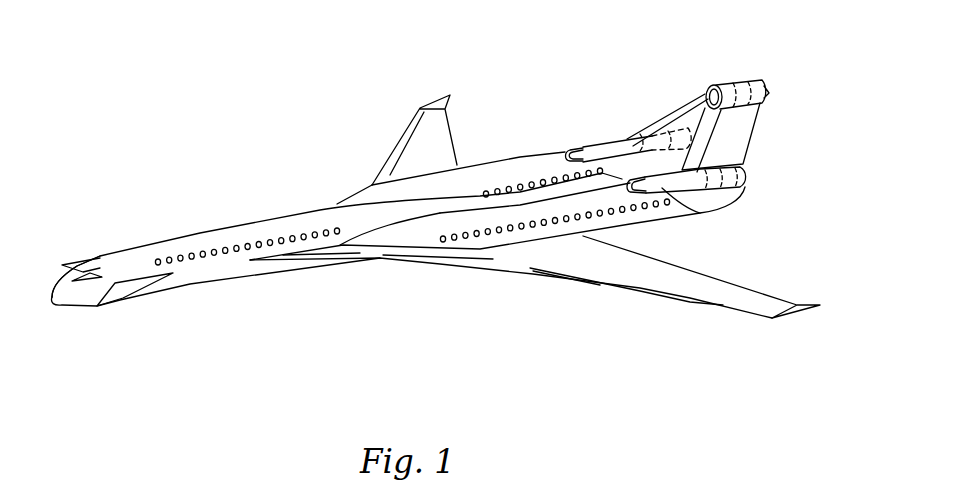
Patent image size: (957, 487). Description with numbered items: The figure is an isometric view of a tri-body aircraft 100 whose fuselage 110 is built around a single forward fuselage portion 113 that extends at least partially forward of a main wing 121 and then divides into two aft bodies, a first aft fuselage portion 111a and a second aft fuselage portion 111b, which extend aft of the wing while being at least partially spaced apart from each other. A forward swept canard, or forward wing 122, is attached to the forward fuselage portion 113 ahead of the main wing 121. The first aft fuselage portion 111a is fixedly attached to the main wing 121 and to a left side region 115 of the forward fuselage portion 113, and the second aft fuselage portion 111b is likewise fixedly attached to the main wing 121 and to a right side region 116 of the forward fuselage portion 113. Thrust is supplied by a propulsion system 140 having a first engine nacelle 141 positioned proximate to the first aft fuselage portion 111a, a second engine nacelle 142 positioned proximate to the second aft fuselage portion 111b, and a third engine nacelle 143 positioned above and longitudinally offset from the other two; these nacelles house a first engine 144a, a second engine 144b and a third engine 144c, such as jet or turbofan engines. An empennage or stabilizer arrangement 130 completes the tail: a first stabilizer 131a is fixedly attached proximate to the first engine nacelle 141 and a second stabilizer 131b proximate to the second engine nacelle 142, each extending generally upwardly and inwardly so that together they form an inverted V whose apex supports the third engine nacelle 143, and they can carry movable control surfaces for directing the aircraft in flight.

The aircraft 100 is at (230, 350).
The fuselage 110 is at (493, 195).
The first aft fuselage portion 111a is at (647, 222).
The second aft fuselage portion 111b is at (556, 157).
The forward fuselage portion 113 is at (200, 232).
The left side region 115 is at (423, 223).
The right side region 116 is at (371, 187).
The main wing 121 is at (453, 103).
The forward wing 122 is at (68, 263).
The stabilizer arrangement 130 is at (752, 157).
The first stabilizer 131a is at (752, 134).
The second stabilizer 131b is at (703, 100).
The propulsion system 140 is at (700, 107).
The first engine nacelle 141 is at (688, 193).
The second engine nacelle 142 is at (572, 149).
The third engine nacelle 143 is at (740, 80).
The first engine 144a is at (732, 190).
The second engine 144b is at (663, 122).
The third engine 144c is at (758, 82).